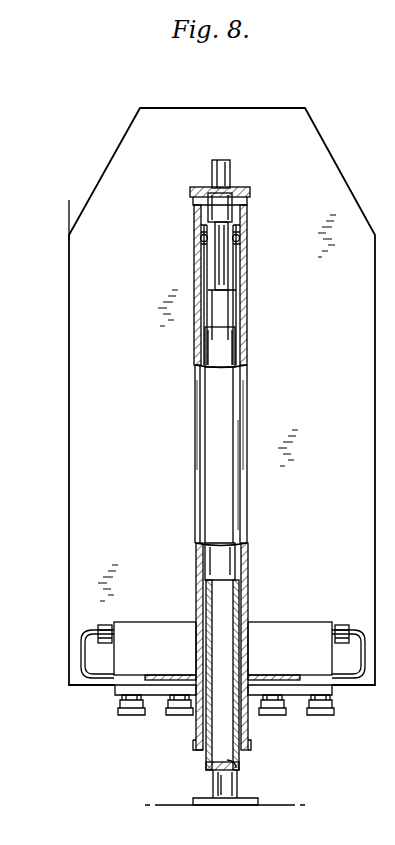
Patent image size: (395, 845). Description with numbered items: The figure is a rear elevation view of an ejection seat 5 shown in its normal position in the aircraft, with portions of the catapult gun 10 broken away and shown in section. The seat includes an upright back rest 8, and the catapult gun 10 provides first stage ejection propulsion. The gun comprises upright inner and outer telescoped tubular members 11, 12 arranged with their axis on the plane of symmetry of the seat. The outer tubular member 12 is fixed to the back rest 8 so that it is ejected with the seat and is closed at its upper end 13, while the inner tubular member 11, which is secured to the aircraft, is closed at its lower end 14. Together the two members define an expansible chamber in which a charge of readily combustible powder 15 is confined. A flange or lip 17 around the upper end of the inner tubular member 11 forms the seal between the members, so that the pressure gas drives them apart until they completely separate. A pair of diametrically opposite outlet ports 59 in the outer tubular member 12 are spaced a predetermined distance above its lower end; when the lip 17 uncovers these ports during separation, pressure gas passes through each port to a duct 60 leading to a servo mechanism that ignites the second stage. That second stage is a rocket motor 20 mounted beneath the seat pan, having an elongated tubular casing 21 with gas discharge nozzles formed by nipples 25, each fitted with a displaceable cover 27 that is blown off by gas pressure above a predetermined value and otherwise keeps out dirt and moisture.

The ejection seat 5 is at (2, 215).
The back rest 8 is at (0, 112).
The catapult gun 10 is at (188, 735).
The inner tubular member 11 is at (217, 345).
The outer tubular member 12 is at (221, 437).
The closed upper end 13 is at (240, 190).
The closed lower end 14 is at (238, 766).
The powder charge 15 is at (220, 262).
The lip 17 is at (238, 240).
The rocket motor 20 is at (176, 622).
The tubular casing 21 is at (276, 636).
The nipple 25 is at (118, 708).
The displaceable cover 27 is at (170, 716).
The outlet ports 59 is at (240, 680).
The duct 60 is at (126, 678).